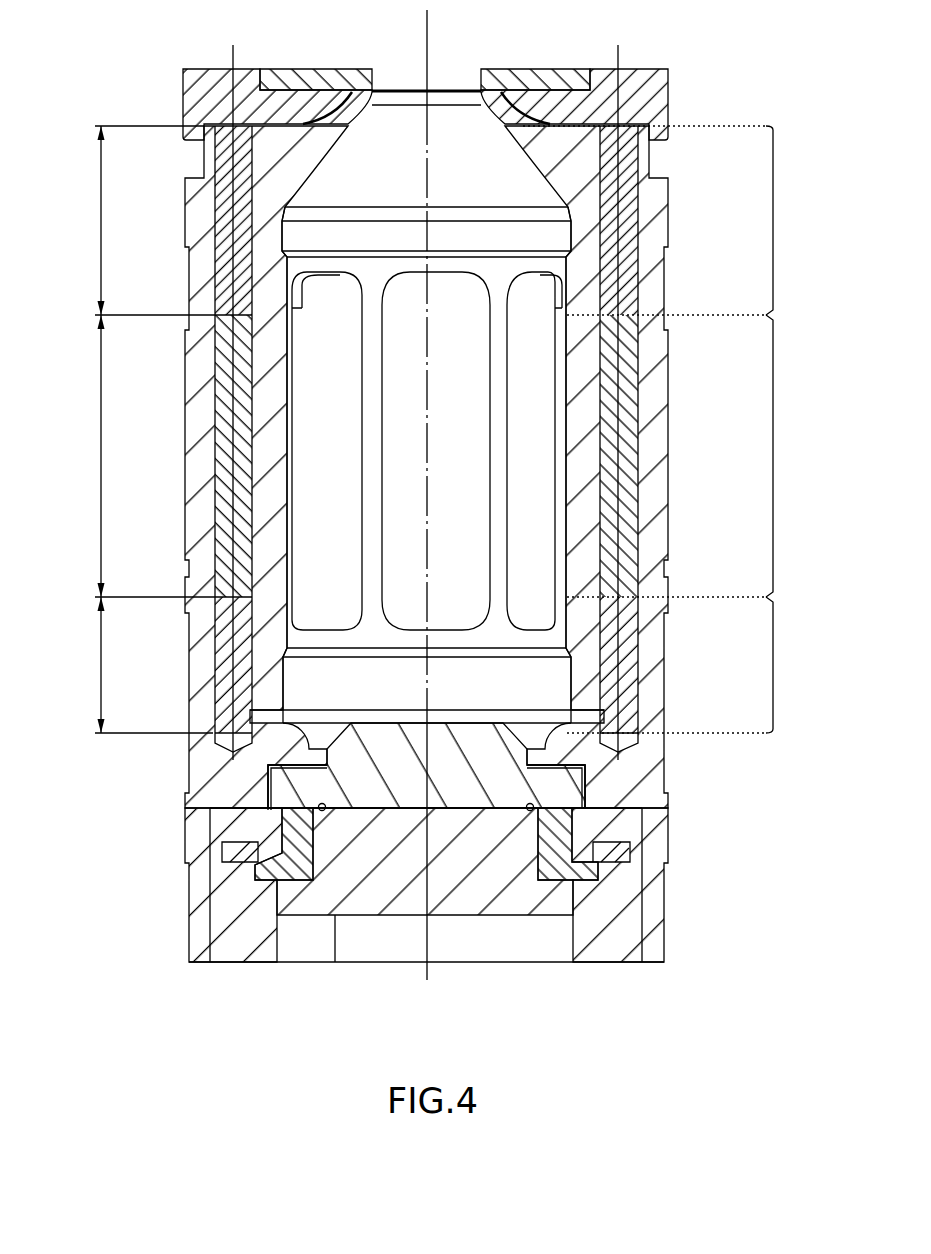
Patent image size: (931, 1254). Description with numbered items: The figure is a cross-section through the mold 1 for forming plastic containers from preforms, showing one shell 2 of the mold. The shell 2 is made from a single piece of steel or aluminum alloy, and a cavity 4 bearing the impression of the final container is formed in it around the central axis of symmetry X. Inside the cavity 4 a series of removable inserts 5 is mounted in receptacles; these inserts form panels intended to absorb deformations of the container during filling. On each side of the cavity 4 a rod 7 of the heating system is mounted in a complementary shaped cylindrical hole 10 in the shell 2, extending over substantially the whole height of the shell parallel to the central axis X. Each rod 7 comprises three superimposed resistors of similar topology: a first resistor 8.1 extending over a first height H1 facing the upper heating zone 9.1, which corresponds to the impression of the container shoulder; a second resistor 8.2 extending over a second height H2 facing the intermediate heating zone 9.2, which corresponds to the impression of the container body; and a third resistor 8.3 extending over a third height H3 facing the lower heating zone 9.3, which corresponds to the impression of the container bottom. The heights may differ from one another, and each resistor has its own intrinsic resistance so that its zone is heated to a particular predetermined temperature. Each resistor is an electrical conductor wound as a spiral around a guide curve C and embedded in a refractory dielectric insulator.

The mold 1 is at (671, 86).
The shell 2 is at (197, 100).
The cavity 4 is at (452, 76).
The inserts 5 is at (320, 436).
The rod 7 is at (214, 263).
The first resistor 8.1 is at (227, 222).
The second resistor 8.2 is at (223, 457).
The third resistor 8.3 is at (222, 657).
The upper heating zone 9.1 is at (671, 220).
The intermediate heating zone 9.2 is at (693, 456).
The lower heating zone 9.3 is at (693, 665).
The cylindrical hole 10 is at (252, 279).
The guide curve C is at (626, 540).
The central axis X is at (430, 580).
The first height H1 is at (161, 220).
The second height H2 is at (161, 456).
The third height H3 is at (141, 665).